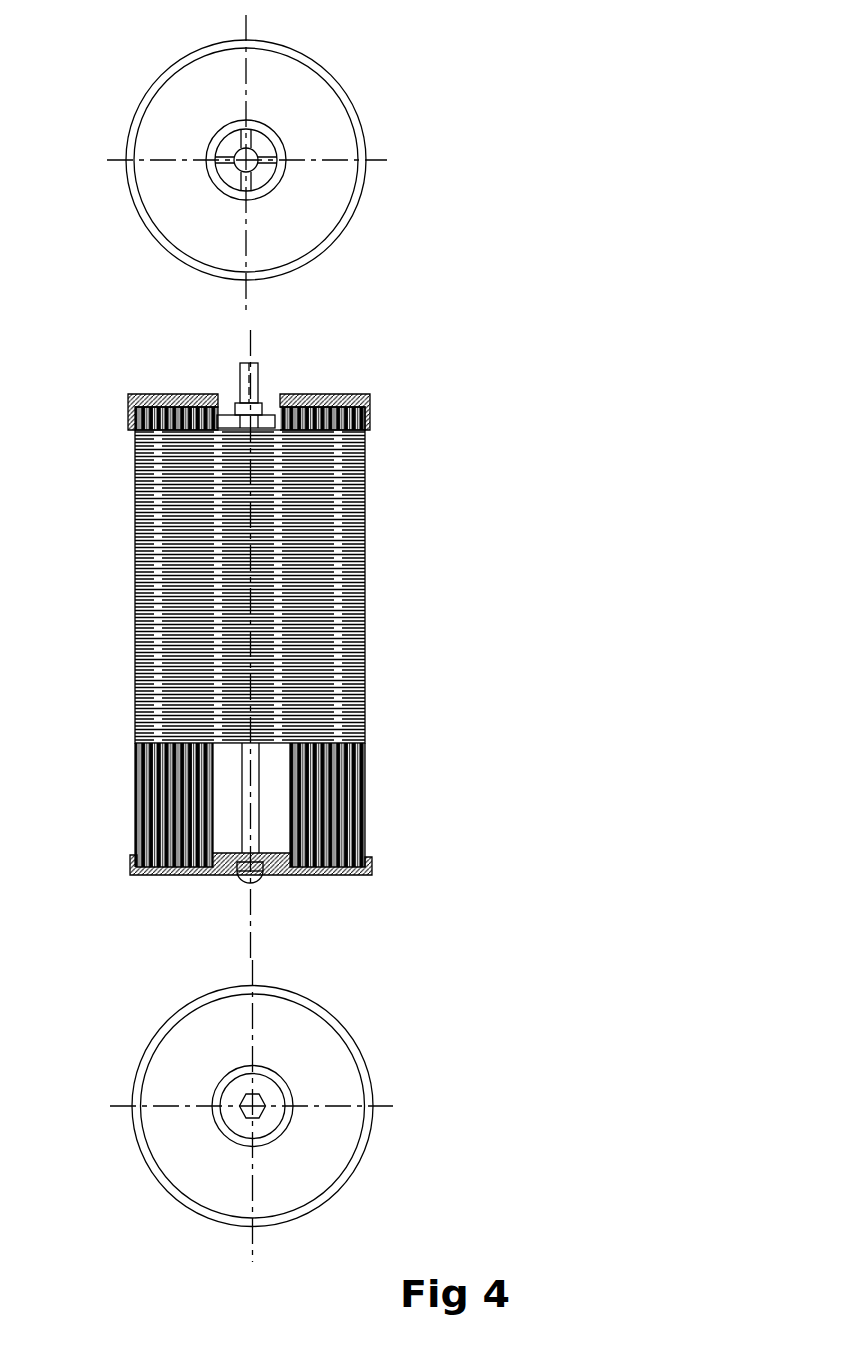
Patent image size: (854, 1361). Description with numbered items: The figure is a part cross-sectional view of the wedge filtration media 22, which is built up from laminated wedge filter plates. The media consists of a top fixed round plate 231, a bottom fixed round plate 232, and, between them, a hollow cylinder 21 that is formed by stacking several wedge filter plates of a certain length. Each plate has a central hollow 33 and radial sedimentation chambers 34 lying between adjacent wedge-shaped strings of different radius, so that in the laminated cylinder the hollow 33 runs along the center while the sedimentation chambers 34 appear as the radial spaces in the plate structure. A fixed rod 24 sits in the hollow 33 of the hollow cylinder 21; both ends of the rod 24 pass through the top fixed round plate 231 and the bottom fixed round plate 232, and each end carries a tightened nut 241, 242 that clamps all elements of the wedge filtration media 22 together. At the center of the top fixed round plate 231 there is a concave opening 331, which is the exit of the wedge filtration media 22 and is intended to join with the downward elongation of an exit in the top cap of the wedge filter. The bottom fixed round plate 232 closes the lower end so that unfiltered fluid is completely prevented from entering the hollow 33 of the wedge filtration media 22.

The hollow cylinder 21 is at (130, 855).
The wedge filtration media 22 is at (359, 366).
The top fixed round plate 231 is at (369, 427).
The bottom fixed round plate 232 is at (310, 1018).
The fixed rod 24 is at (252, 365).
The tightened nut 241 is at (237, 403).
The tightened nut 242 is at (242, 883).
The hollow 33 is at (237, 798).
The concave opening 331 is at (262, 143).
The radial sedimentation chambers 34 is at (359, 807).